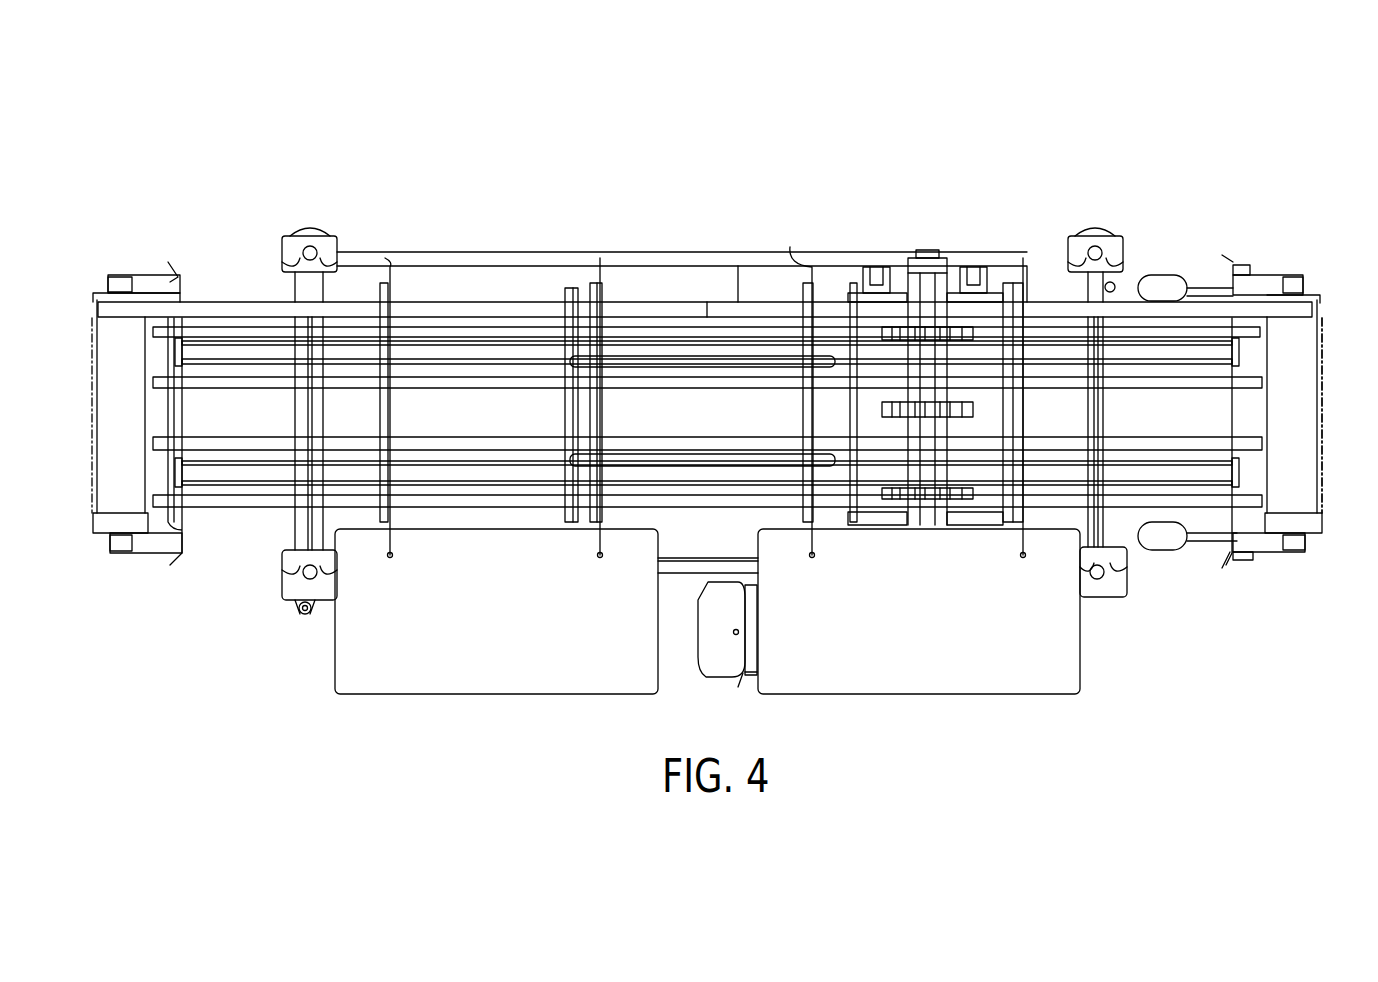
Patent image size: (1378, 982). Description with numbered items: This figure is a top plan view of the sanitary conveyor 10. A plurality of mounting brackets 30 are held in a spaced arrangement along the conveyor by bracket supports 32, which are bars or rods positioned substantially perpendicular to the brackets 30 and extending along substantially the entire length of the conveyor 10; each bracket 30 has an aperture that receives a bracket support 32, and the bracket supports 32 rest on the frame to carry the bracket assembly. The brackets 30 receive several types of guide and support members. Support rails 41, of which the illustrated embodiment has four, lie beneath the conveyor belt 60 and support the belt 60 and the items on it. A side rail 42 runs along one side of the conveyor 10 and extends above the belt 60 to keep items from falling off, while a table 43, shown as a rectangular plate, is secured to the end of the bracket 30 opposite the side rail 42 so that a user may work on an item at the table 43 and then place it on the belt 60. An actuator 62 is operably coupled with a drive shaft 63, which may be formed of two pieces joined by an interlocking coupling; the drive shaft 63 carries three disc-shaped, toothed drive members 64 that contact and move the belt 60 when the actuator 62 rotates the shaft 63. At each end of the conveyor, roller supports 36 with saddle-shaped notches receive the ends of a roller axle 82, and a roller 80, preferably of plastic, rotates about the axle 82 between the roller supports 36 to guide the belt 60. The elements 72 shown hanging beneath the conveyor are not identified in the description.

The sanitary conveyor 10 is at (355, 167).
The mounting bracket 30 is at (185, 274).
The bracket support 32 is at (653, 343).
The roller support 36 is at (150, 274).
The support rail 41 is at (458, 382).
The side rail 42 is at (237, 303).
The table 43 is at (419, 676).
The conveyor belt 60 is at (1320, 358).
The actuator 62 is at (722, 672).
The drive shaft 63 is at (930, 287).
The drive member 64 is at (965, 420).
The cord 72 is at (602, 558).
The roller 80 is at (108, 358).
The roller axle 82 is at (110, 282).